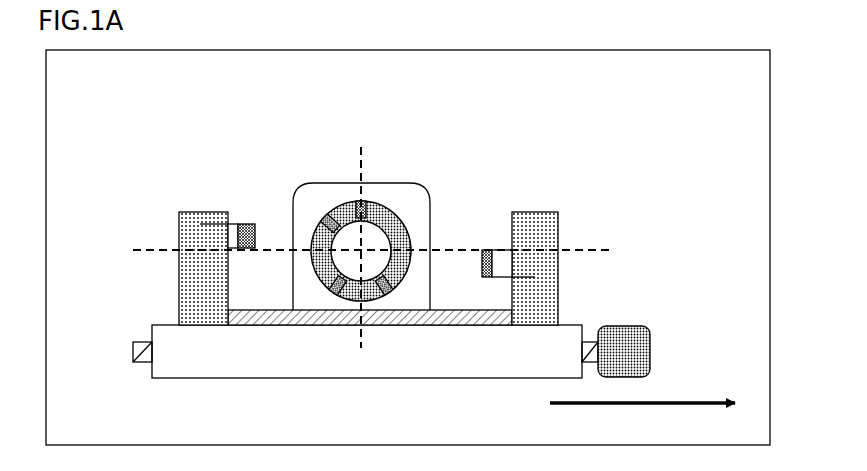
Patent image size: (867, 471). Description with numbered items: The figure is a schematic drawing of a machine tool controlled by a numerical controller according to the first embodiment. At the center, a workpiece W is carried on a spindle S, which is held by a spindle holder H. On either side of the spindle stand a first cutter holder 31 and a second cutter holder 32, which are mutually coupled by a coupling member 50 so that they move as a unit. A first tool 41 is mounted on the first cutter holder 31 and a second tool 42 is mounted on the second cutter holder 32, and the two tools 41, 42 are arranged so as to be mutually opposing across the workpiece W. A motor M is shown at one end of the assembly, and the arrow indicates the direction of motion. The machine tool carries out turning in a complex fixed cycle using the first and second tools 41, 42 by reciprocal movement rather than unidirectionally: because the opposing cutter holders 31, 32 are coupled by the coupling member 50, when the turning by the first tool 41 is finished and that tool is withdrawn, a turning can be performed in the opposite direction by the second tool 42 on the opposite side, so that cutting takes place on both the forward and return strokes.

The first cutter holder 31 is at (565, 248).
The second cutter holder 32 is at (176, 237).
The first tool 41 is at (528, 246).
The second tool 42 is at (198, 213).
The coupling member 50 is at (274, 330).
The spindle holder H is at (338, 176).
The spindle S is at (316, 214).
The workpiece W is at (394, 224).
The motor M is at (655, 344).